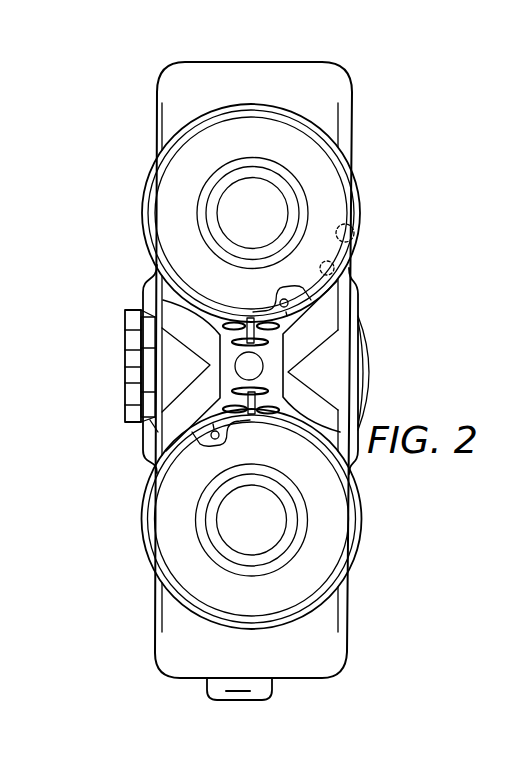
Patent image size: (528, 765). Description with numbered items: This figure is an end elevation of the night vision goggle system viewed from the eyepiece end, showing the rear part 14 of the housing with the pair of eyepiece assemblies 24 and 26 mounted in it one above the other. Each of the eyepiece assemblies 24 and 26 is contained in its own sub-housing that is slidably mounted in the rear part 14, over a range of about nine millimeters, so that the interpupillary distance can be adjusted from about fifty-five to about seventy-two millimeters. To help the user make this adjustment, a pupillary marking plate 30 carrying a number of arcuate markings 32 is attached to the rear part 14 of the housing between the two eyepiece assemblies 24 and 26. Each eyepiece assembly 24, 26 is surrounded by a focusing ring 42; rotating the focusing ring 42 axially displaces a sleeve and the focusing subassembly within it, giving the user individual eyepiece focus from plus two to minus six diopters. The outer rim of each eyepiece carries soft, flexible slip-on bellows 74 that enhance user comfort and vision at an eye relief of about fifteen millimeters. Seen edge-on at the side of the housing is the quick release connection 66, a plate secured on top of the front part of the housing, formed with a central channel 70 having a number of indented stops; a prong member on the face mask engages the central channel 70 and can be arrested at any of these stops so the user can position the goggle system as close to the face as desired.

The rear part of the housing 14 is at (297, 649).
The eyepiece assembly 24 is at (364, 180).
The eyepiece assembly 26 is at (367, 534).
The pupillary marking plate 30 is at (213, 348).
The arcuate markings 32 is at (276, 407).
The focusing ring 42 is at (146, 187).
The quick release connection 66 is at (126, 417).
The central channel 70 is at (127, 370).
The bellows 74 is at (172, 156).